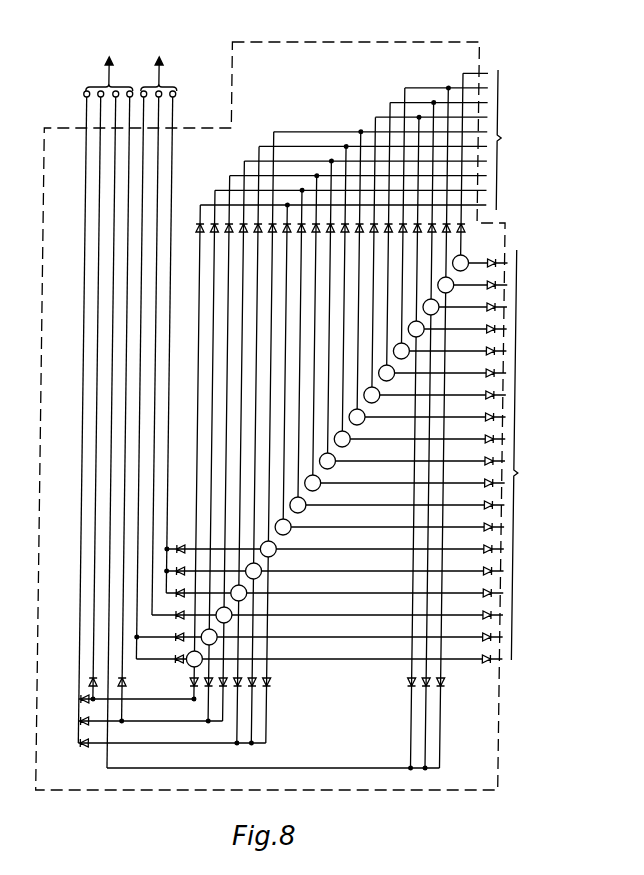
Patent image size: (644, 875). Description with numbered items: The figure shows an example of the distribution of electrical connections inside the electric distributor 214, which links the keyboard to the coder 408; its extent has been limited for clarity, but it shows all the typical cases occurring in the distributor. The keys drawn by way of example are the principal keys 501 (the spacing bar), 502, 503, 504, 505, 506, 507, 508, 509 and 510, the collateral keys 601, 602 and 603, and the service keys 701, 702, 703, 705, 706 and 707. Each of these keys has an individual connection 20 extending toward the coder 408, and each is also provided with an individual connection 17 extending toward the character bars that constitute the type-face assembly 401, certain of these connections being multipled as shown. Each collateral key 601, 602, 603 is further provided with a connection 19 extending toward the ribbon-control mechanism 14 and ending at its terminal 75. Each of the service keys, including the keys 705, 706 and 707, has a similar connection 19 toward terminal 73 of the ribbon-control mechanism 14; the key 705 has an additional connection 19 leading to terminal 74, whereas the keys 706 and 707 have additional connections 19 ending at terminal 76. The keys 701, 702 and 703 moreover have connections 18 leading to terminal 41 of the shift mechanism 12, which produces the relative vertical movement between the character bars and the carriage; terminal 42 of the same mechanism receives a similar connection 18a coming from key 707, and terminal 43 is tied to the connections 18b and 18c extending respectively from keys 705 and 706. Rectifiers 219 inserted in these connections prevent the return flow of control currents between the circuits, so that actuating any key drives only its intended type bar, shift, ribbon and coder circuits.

The shift mechanism 12 is at (159, 65).
The ribbon-control mechanism 14 is at (110, 65).
The connection to type-face assembly 17 is at (312, 146).
The connection to shift mechanism 18 is at (172, 147).
The connection from key 707 18a is at (158, 174).
The connection from key 705 18b is at (142, 656).
The connection from key 706 18c is at (142, 633).
The connection to ribbon-control mechanism 19 is at (98, 186).
The output lead to coder 20 is at (502, 262).
The terminal of shift mechanism 41 is at (174, 342).
The terminal of shift mechanism 42 is at (160, 353).
The terminal of shift mechanism 43 is at (144, 375).
The terminal of ribbon-control mechanism 73 is at (87, 417).
The terminal of ribbon-control mechanism 74 is at (101, 395).
The terminal of ribbon-control mechanism 75 is at (116, 429).
The terminal of ribbon-control mechanism 76 is at (130, 406).
The electric distributor 214 is at (365, 38).
The rectifiers 219 is at (199, 231).
The type-face assembly 401 is at (509, 138).
The coder 408 is at (521, 473).
The principal key (spacing bar) 501 is at (465, 258).
The principal key 502 is at (412, 350).
The principal key 503 is at (396, 379).
The principal key 504 is at (382, 400).
The principal key 505 is at (368, 422).
The principal key 506 is at (352, 444).
The principal key 507 is at (339, 466).
The principal key 508 is at (325, 488).
The principal key 509 is at (312, 510).
The principal key 510 is at (298, 532).
The collateral key 601 is at (452, 282).
The collateral key 602 is at (437, 305).
The collateral key 603 is at (424, 327).
The service key 701 is at (283, 553).
The service key 702 is at (270, 574).
The service key 703 is at (257, 596).
The service key 705 is at (198, 663).
The service key 706 is at (222, 640).
The service key 707 is at (236, 617).